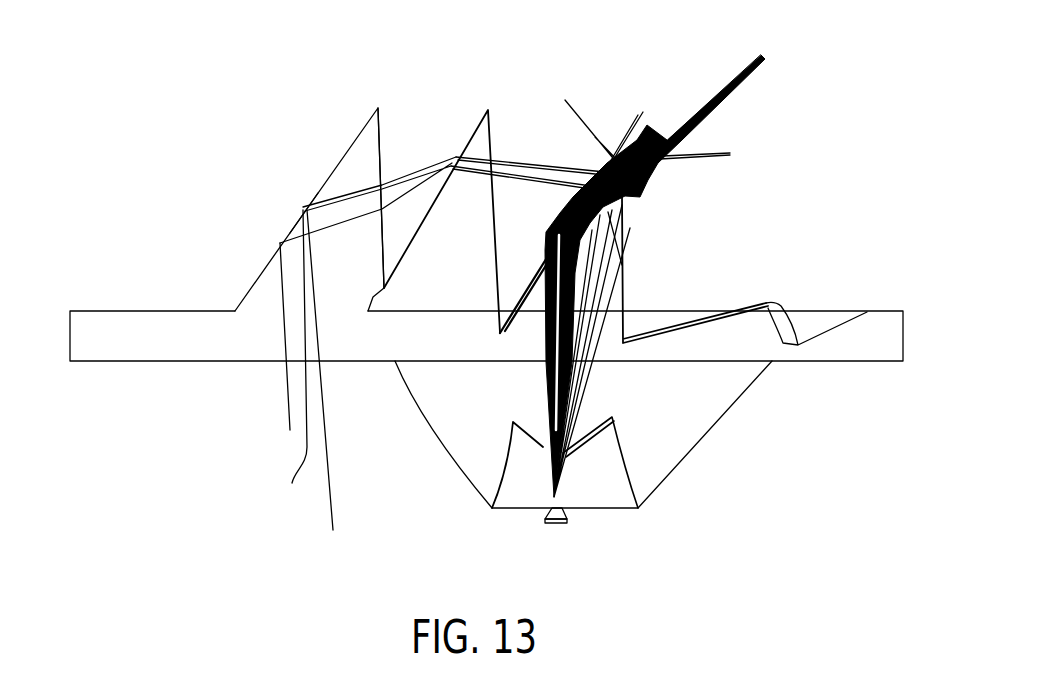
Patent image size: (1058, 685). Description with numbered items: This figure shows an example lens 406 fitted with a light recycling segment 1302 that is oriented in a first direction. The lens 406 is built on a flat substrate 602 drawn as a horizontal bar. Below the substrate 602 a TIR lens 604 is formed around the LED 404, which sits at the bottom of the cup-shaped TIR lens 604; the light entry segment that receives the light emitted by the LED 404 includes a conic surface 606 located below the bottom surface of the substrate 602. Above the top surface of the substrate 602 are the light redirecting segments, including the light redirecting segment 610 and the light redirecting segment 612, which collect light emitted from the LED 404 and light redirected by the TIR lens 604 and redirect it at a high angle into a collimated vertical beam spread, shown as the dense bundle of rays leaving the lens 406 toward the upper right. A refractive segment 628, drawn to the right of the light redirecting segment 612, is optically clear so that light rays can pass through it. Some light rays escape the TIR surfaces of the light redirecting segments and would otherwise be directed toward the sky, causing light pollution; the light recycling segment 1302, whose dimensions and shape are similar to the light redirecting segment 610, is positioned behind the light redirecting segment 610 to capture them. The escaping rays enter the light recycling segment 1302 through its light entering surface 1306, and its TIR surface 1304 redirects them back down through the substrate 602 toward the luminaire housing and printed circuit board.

The substrate 602 is at (70, 311).
The light recycling segment 1302 is at (377, 107).
The TIR surface 1304 is at (308, 205).
The light entering surface 1306 is at (382, 145).
The light redirecting segment 610 is at (488, 110).
The light redirecting segment 612 is at (598, 162).
The lens 406 is at (798, 112).
The refractive segment 628 is at (760, 303).
The TIR lens 604 is at (447, 450).
The conic surface 606 is at (600, 437).
The LED 404 is at (567, 522).